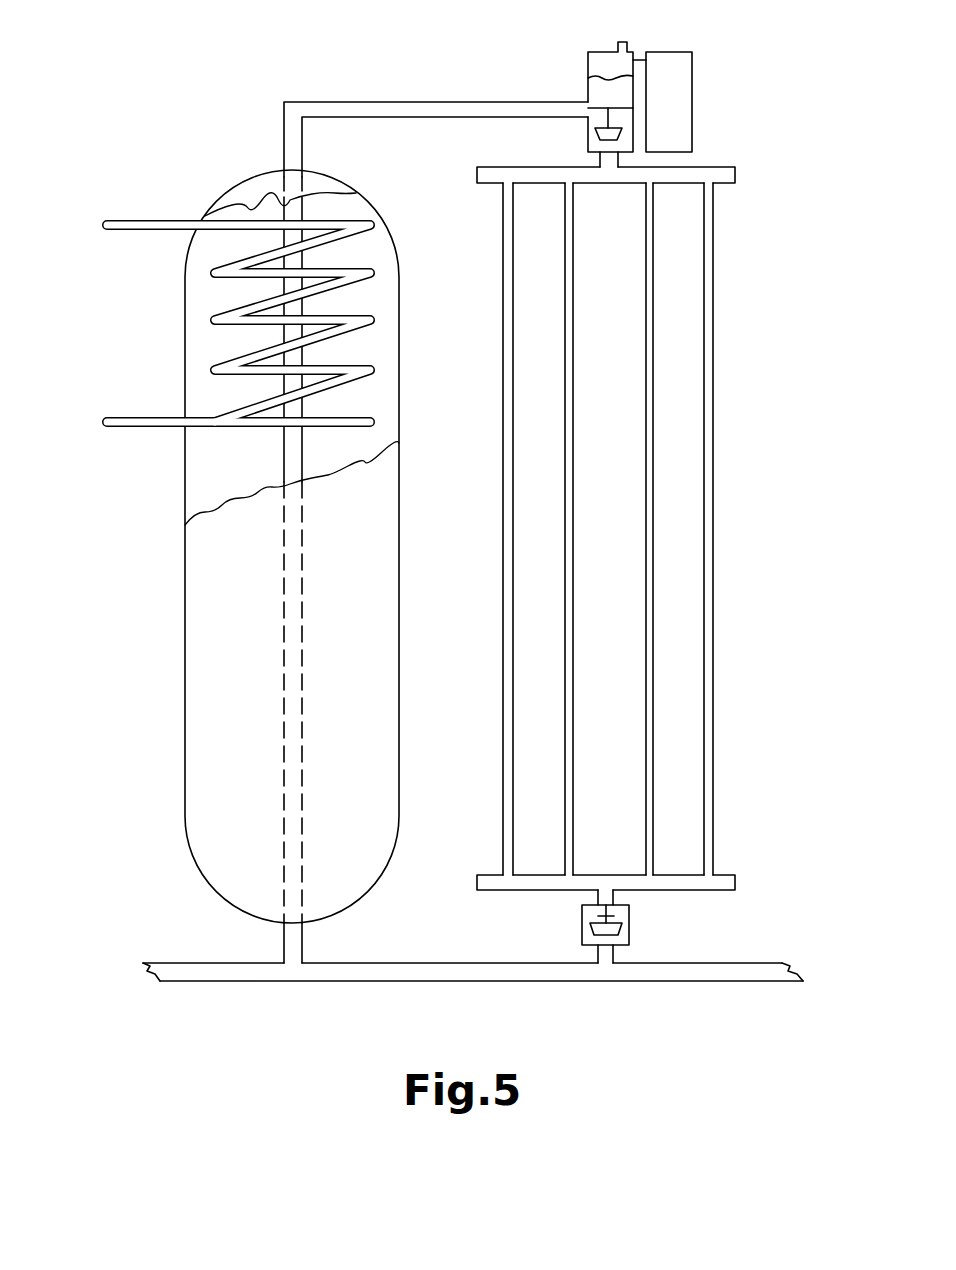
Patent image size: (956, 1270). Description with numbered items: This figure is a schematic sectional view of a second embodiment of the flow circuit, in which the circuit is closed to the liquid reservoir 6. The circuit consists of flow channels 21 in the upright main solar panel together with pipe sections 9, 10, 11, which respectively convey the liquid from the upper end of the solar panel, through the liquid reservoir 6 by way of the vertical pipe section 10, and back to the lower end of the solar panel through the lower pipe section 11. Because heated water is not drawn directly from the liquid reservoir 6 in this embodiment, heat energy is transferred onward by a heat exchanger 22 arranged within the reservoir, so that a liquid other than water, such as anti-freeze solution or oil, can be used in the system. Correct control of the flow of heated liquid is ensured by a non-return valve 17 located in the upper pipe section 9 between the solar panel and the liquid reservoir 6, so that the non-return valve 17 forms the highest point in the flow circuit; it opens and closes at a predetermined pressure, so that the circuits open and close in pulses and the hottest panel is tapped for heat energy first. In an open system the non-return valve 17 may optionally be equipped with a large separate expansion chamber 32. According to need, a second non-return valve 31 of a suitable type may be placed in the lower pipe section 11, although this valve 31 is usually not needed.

The liquid reservoir 6 is at (359, 726).
The pipe section 9 is at (422, 108).
The vertical pipe section 10 is at (292, 307).
The pipe section 11 is at (423, 972).
The non-return valve 17 is at (565, 62).
The flow channels 21 is at (705, 525).
The heat exchanger 22 is at (367, 377).
The second non-return valve 31 is at (638, 930).
The separate expansion chamber 32 is at (683, 95).